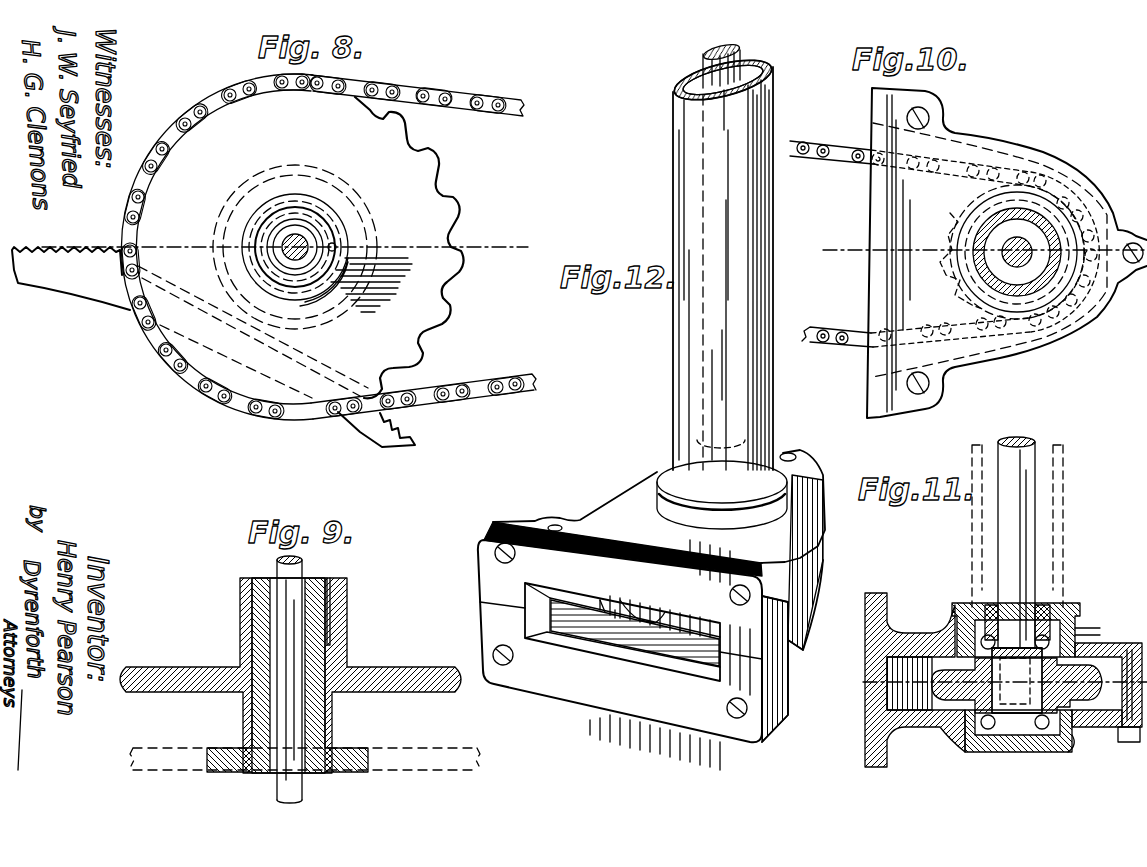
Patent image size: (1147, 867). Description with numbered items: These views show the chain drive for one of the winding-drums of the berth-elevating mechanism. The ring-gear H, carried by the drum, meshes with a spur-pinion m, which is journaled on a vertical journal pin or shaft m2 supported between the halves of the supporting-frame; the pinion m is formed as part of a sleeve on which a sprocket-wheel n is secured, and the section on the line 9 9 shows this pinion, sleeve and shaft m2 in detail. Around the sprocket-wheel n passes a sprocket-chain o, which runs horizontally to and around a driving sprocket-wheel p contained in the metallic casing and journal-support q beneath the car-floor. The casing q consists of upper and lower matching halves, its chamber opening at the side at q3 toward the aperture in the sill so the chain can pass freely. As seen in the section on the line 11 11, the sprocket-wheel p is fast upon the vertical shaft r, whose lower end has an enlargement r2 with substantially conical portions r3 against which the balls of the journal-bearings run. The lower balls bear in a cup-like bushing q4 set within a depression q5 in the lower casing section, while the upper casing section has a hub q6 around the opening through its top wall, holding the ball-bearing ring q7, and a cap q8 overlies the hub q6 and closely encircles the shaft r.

In FIG. 8, the pinion m is at (337, 178).
In FIG. 9, the pinion m is at (347, 750).
In FIG. 8, the journal pins or shafts m2 is at (297, 235).
In FIG. 9, the journal pins or shafts m2 is at (296, 592).
In FIG. 8, the sprocket-wheel n is at (382, 272).
In FIG. 9, the sprocket-wheel n is at (290, 675).
In FIG. 8, the sprocket-chain o is at (328, 246).
In FIG. 10, the sprocket-chain o is at (944, 244).
In FIG. 8, the ring-gear H is at (72, 284).
In FIG. 8, the section line 9- 9 is at (283, 248).
In FIG. 10, the section line 11- 11 is at (971, 248).
In FIG. 12, the driving sprocket-wheel p is at (622, 605).
In FIG. 10, the driving sprocket-wheel p is at (952, 240).
In FIG. 11, the driving sprocket-wheel p is at (957, 683).
In FIG. 12, the casing and journal-support q is at (796, 662).
In FIG. 10, the casing and journal-support q is at (1007, 253).
In FIG. 11, the casing and journal-support q is at (1078, 632).
In FIG. 11, the side opening of casing chamber q3 is at (880, 694).
In FIG. 11, the cup-like bushing q4 is at (1047, 733).
In FIG. 11, the depression q5 is at (1067, 737).
In FIG. 11, the hub q6 is at (973, 633).
In FIG. 11, the ball-bearing ring q7 is at (1050, 633).
In FIG. 11, the cap q8 is at (1037, 597).
In FIG. 12, the vertical shaft r is at (742, 62).
In FIG. 10, the vertical shaft r is at (1032, 245).
In FIG. 11, the vertical shaft r is at (1017, 523).
In FIG. 11, the enlargement r2 is at (1017, 680).
In FIG. 11, the conical portions r3 is at (1007, 737).